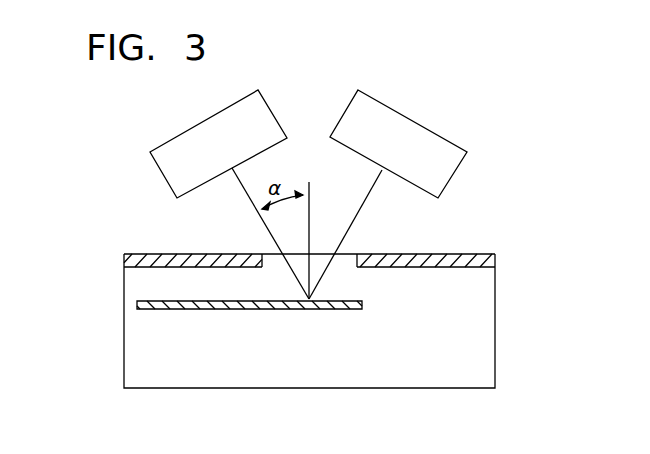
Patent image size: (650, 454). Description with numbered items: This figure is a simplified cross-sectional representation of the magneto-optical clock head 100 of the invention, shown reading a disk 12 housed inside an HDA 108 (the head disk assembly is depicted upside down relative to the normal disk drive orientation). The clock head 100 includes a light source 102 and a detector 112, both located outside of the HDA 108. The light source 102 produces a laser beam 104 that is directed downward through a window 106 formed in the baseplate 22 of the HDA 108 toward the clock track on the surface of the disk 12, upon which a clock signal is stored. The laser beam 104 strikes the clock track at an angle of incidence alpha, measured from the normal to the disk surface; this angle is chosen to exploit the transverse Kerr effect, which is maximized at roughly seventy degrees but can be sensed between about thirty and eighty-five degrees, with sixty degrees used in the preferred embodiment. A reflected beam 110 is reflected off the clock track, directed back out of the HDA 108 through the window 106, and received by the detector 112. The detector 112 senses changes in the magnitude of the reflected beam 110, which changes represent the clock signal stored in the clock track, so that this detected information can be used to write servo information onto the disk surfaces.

The magneto-optical clock head 100 is at (480, 208).
The light source 102 is at (190, 130).
The laser beam 104 is at (267, 226).
The window 106 is at (343, 261).
The HDA 108 is at (123, 317).
The reflected beam 110 is at (366, 198).
The detector 112 is at (432, 131).
The disk 12 is at (340, 301).
The baseplate 22 is at (453, 254).